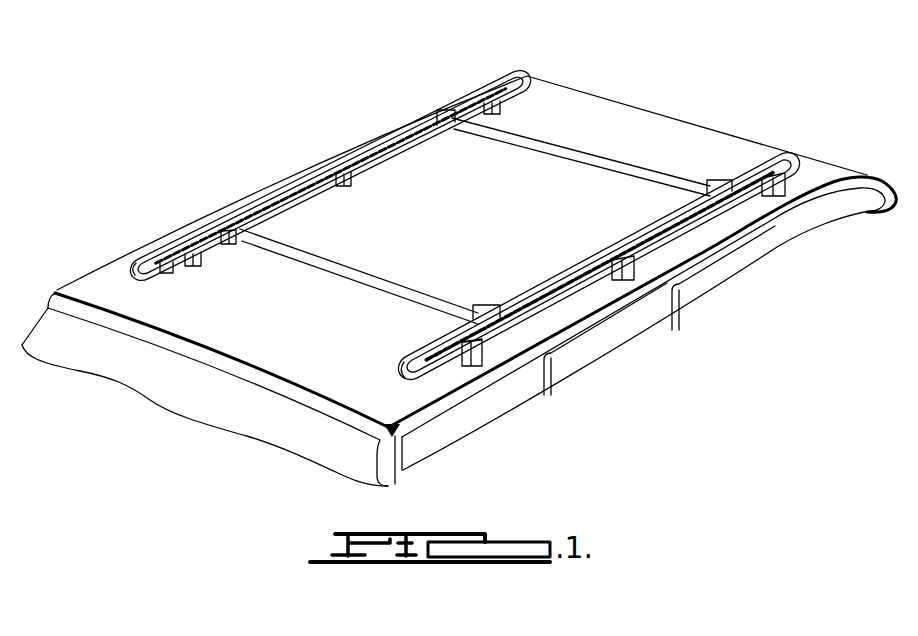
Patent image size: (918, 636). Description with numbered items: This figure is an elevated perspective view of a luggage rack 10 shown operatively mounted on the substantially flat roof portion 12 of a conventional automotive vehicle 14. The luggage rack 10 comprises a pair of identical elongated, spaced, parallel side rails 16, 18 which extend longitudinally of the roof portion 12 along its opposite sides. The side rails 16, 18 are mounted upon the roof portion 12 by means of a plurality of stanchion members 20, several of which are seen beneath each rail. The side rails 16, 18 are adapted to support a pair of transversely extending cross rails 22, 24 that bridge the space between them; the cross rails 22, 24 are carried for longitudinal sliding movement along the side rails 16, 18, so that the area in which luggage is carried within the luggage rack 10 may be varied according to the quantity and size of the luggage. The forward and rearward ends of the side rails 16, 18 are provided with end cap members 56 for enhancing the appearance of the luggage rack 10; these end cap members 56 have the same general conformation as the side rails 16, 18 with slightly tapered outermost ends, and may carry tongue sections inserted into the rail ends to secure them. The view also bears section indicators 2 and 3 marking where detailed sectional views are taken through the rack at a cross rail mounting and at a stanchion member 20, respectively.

The luggage rack 10 is at (465, 192).
The roof portion 12 is at (650, 123).
The automotive vehicle 14 is at (100, 268).
The side rail 16 is at (549, 279).
The side rail 18 is at (361, 146).
The stanchion members 20 is at (197, 268).
The cross rail 22 is at (395, 272).
The cross rail 24 is at (577, 138).
The end cap members 56 is at (144, 252).
The section line FIG. 2 is at (486, 352).
The section line FIG. 3 is at (232, 248).